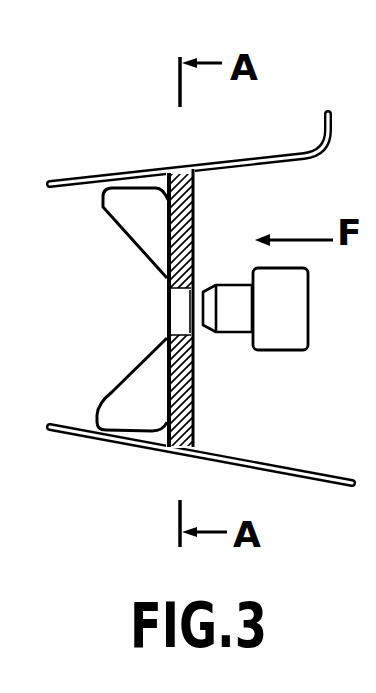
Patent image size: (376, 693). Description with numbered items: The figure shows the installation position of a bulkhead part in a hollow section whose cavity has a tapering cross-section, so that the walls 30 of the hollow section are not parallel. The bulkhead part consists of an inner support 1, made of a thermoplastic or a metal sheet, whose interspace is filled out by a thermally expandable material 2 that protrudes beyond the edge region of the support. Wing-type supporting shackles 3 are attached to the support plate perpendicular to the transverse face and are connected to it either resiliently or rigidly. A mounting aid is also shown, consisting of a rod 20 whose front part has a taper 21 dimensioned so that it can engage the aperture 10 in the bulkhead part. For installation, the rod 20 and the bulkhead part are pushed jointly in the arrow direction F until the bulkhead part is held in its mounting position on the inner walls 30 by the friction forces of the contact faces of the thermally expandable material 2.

The inner support 1 is at (195, 217).
The thermally expandable material 2 is at (196, 184).
The supporting shackles 3 is at (130, 395).
The aperture 10 is at (180, 320).
The rod 20 is at (287, 342).
The taper 21 is at (230, 325).
The walls 30 is at (302, 150).